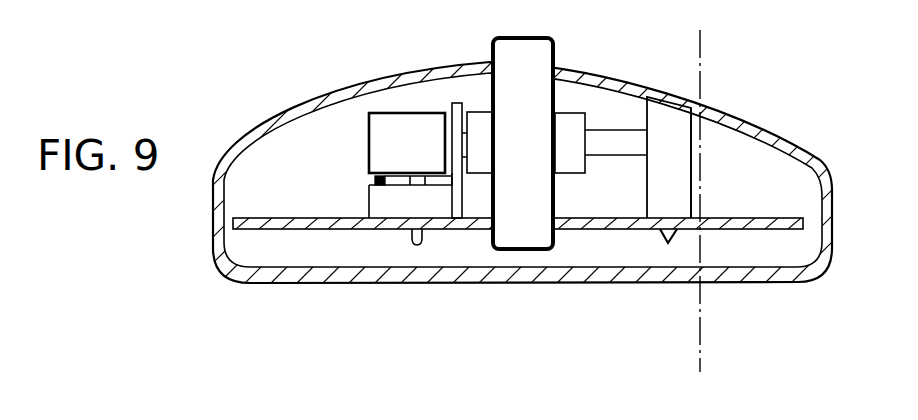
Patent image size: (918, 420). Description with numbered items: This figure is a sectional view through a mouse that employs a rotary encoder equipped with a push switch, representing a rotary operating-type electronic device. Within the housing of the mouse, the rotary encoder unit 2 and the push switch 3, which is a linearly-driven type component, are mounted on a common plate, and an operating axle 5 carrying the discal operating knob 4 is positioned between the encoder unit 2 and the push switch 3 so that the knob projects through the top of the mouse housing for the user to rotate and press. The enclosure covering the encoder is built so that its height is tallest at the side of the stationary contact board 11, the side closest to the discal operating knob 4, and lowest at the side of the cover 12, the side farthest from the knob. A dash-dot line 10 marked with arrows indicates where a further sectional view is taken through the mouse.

The rotary encoder unit 2 is at (673, 117).
The push switch 3 is at (398, 205).
The discal operating knob 4 is at (518, 237).
The operating axle 5 is at (617, 145).
The line 10— 10 is at (702, 372).
The stationary contact board 11 is at (643, 111).
The cover 12 is at (693, 152).